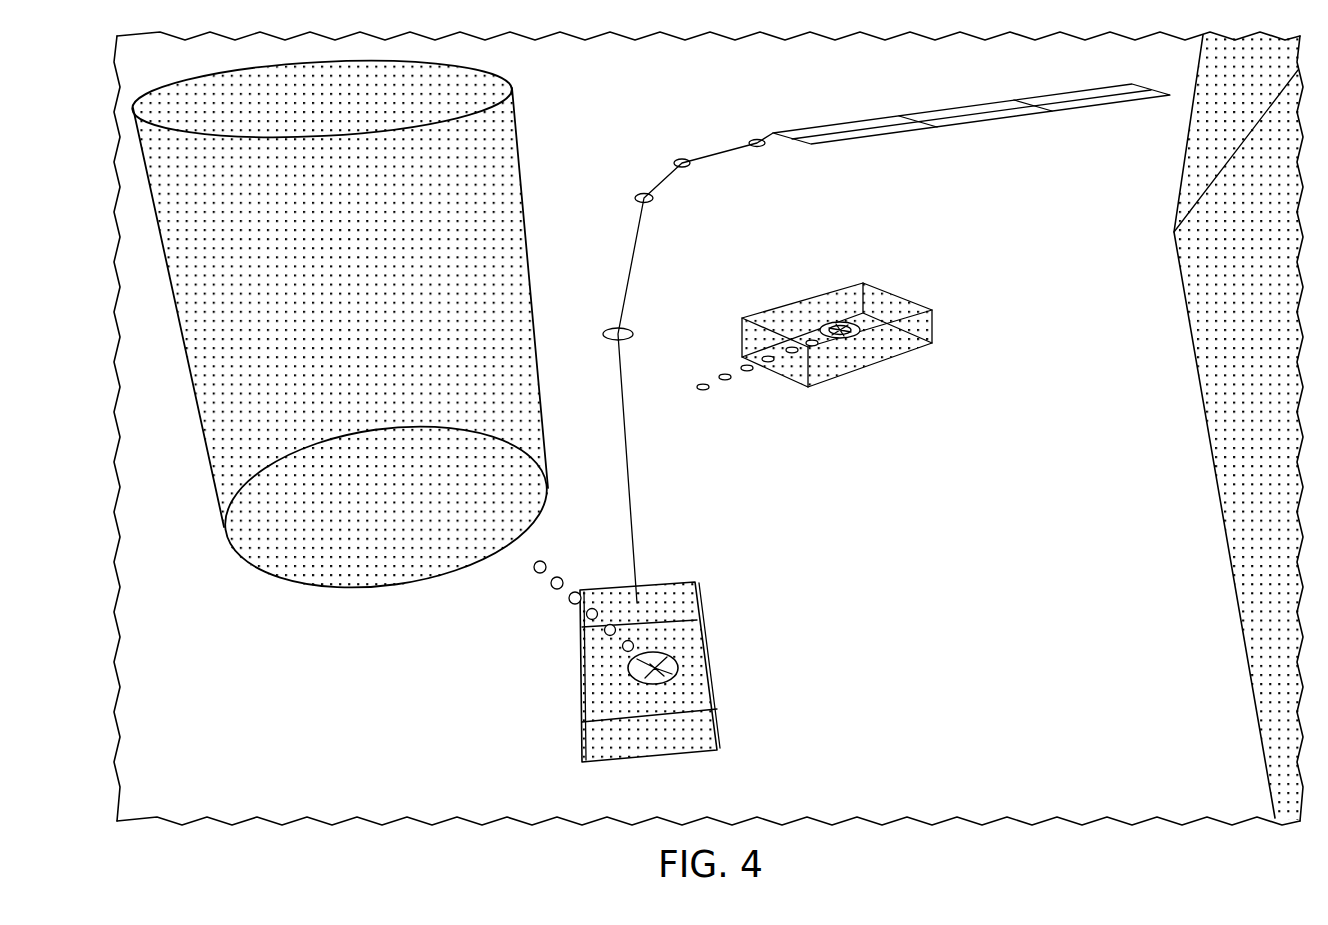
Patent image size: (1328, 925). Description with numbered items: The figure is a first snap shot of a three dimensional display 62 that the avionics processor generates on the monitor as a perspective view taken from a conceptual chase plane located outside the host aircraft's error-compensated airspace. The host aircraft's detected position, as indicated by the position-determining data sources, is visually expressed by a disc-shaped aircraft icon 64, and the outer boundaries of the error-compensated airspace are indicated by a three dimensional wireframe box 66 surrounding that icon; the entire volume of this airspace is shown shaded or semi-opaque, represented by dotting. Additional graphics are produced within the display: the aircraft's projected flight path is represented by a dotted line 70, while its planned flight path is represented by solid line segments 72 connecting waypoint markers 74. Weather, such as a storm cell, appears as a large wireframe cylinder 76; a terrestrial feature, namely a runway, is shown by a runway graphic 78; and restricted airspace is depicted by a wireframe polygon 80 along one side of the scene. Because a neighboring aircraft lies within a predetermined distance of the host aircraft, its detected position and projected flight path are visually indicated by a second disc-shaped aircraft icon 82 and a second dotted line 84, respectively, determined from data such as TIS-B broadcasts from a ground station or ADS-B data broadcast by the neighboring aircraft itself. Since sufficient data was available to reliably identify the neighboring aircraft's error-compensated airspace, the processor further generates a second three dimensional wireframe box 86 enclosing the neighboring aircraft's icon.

The three dimensional display 62 is at (377, 687).
The disc-shaped aircraft icon 64 is at (668, 660).
The three dimensional wireframe box 66 is at (712, 680).
The dotted line 70 is at (552, 588).
The solid line segments 72 is at (722, 157).
The waypoint markers 74 is at (757, 140).
The wireframe cylinder 76 is at (360, 281).
The runway graphic 78 is at (990, 121).
The wireframe polygon 80 is at (1263, 216).
The second disc-shaped aircraft icon 82 is at (832, 323).
The second dotted line 84 is at (728, 382).
The three dimensional wireframe box 86 is at (934, 321).